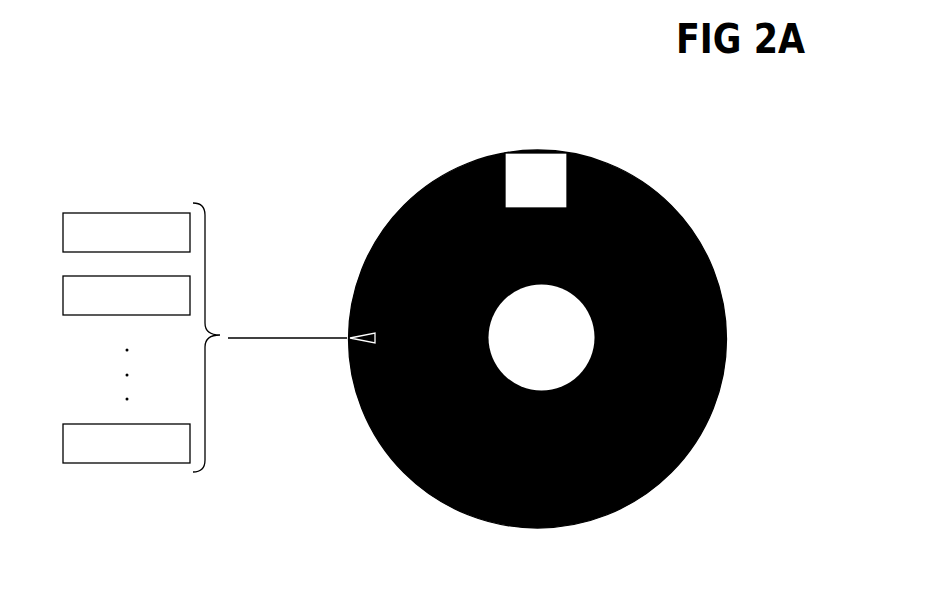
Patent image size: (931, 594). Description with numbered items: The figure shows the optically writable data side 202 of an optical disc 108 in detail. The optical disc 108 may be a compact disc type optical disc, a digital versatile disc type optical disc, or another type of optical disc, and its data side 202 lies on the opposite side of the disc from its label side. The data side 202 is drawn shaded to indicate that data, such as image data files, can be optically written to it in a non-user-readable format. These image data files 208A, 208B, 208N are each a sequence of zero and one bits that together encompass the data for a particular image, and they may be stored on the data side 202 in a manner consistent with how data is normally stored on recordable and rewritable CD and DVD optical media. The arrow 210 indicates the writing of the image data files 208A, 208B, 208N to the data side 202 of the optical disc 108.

The optical disc 108 is at (648, 518).
The optically writable data side 202 is at (727, 330).
The image data file 208A is at (128, 213).
The image data file 208B is at (118, 316).
The image data file 208N is at (158, 464).
The arrow 210 is at (242, 340).